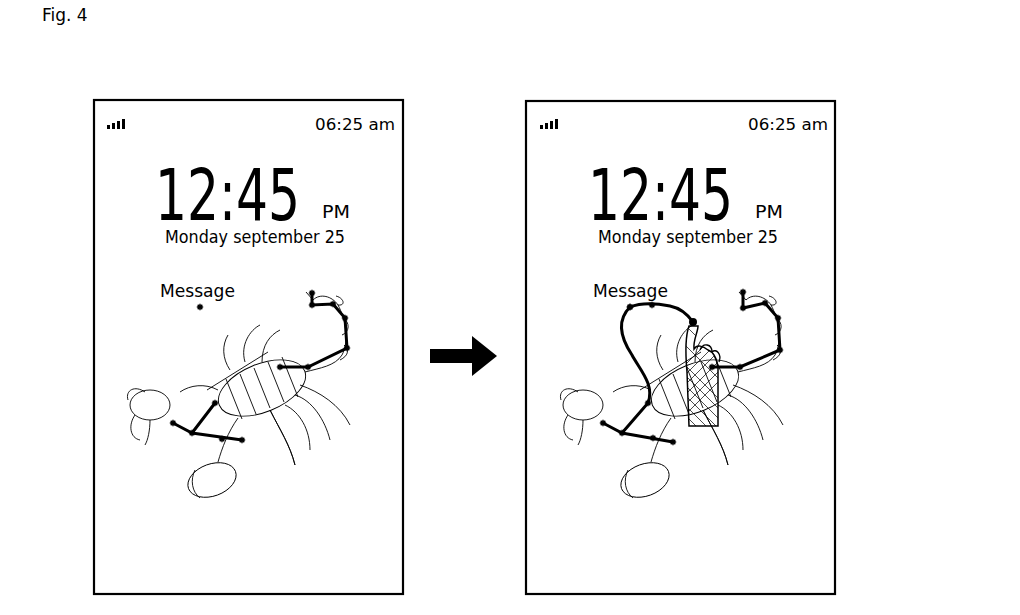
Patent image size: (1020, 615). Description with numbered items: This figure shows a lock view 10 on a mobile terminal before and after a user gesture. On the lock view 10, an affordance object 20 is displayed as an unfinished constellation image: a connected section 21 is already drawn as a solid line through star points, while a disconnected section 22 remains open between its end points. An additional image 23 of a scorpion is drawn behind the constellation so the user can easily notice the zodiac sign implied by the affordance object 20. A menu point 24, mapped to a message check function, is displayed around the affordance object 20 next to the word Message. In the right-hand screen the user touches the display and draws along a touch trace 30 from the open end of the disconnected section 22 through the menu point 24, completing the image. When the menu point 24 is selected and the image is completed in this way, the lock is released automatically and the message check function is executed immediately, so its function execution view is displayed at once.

The lock view 10 is at (247, 100).
The affordance object 20 is at (160, 392).
The connected section 21 is at (310, 475).
The disconnected section 22 is at (235, 370).
The additional image 23 is at (310, 413).
The menu point 24 is at (198, 307).
The touch trace 30 is at (697, 319).